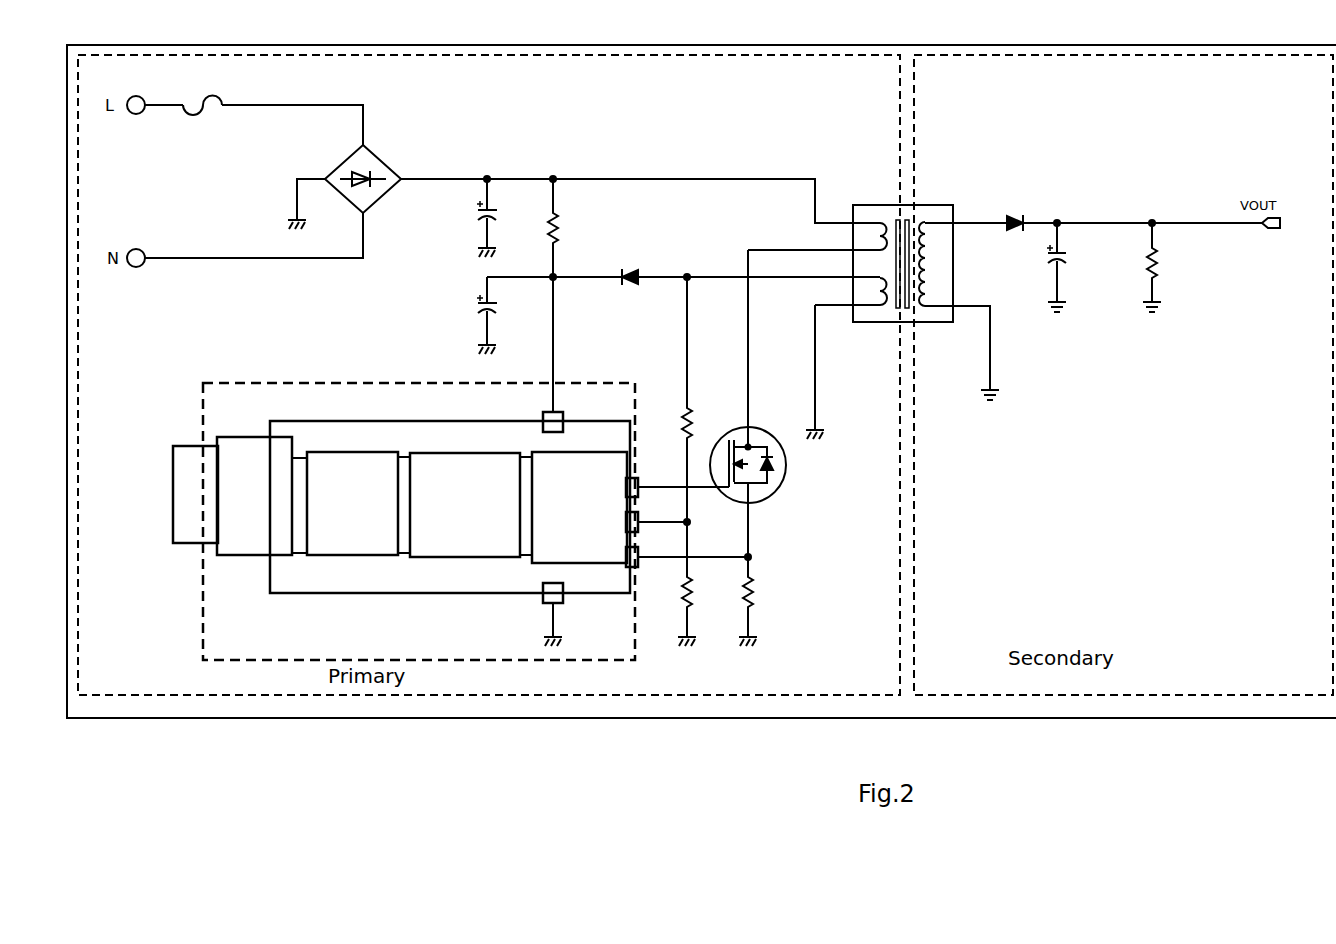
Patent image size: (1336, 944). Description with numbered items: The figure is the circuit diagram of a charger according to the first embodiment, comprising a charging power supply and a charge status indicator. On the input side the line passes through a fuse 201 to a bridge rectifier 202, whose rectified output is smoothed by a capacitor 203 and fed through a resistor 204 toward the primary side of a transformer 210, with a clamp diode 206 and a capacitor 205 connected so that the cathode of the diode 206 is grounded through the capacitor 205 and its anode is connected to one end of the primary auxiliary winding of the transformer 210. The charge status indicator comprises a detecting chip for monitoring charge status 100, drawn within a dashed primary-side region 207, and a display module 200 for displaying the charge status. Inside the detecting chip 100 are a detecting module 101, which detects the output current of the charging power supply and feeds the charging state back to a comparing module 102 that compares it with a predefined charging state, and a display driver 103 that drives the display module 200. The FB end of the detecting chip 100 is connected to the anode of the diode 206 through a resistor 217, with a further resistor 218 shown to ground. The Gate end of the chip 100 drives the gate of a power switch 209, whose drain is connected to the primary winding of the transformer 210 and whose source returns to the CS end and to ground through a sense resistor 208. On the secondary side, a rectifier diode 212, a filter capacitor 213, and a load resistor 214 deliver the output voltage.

The detecting chip for monitoring charge status 100 is at (509, 461).
The detecting module 101 is at (579, 507).
The comparing module 102 is at (465, 505).
The display driver 103 is at (352, 503).
The display module 200 is at (232, 496).
The fuse 201 is at (202, 118).
The bridge rectifier 202 is at (344, 185).
The capacitor 203 is at (467, 218).
The resistor 204 is at (572, 228).
The capacitor 205 is at (467, 315).
The diode 206 is at (625, 289).
The primary control circuit 207 is at (419, 521).
The resistor 208 is at (765, 574).
The power switch 209 is at (766, 376).
The transformer 210 is at (930, 302).
The diode 212 is at (1131, 214).
The capacitor 213 is at (1075, 267).
The resistor 214 is at (1171, 267).
The resistor 217 is at (668, 399).
The resistor 218 is at (670, 582).